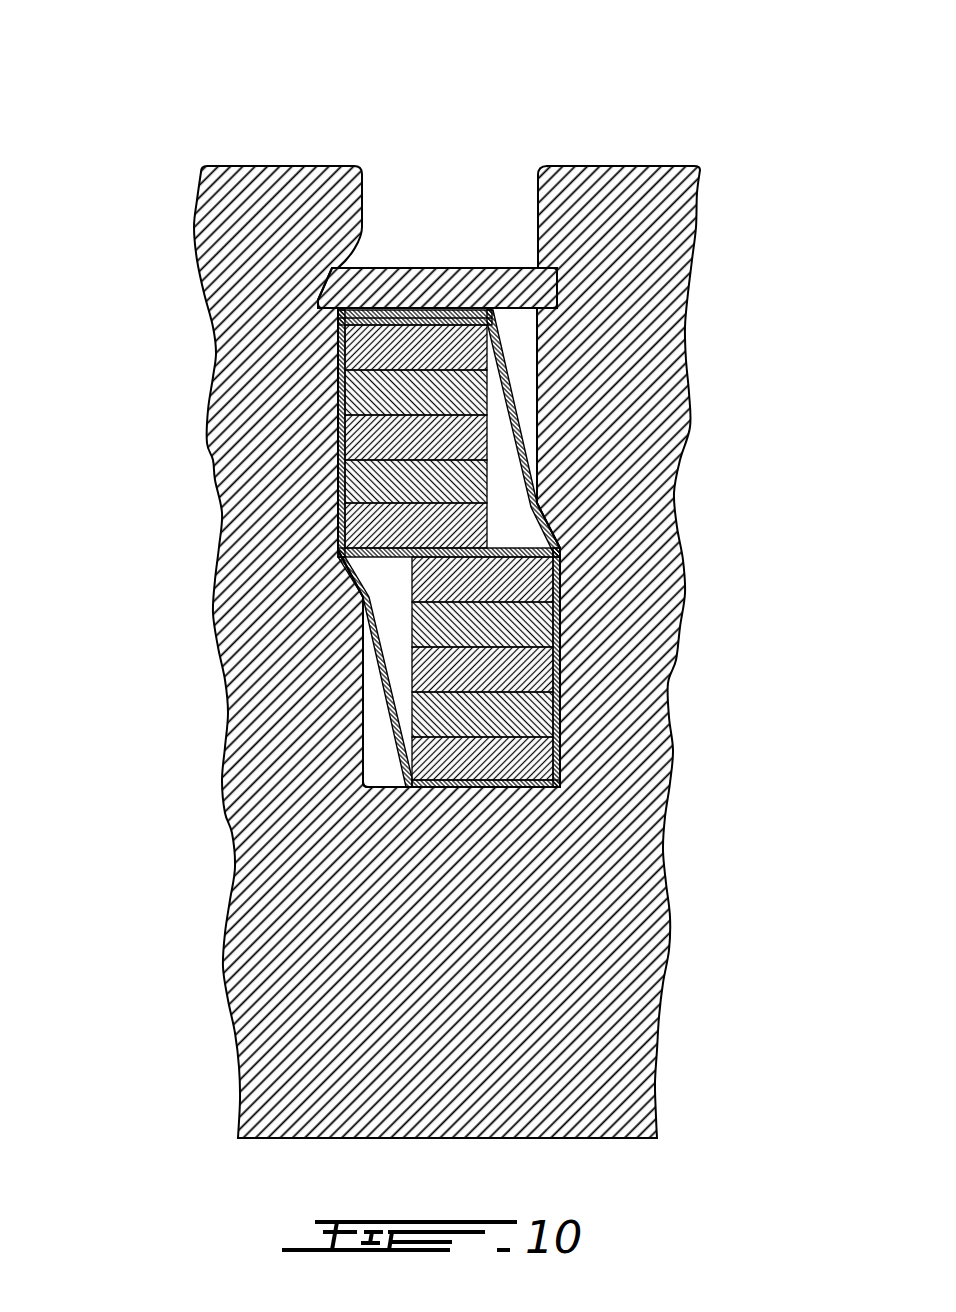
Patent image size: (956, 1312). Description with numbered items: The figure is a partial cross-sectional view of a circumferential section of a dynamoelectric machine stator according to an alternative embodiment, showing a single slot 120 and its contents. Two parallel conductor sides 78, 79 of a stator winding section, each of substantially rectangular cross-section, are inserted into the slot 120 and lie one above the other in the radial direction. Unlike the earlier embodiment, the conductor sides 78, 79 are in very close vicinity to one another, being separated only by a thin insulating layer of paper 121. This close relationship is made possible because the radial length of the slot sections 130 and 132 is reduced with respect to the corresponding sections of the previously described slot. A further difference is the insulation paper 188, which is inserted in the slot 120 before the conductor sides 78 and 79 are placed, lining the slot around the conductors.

The slot 120 is at (440, 220).
The section of the slot 132 is at (517, 348).
The conductor side 78 is at (427, 473).
The insulating layer of paper 121 is at (517, 545).
The insulation paper 188 is at (377, 665).
The conductor side 79 is at (497, 699).
The section of the slot 130 is at (380, 765).